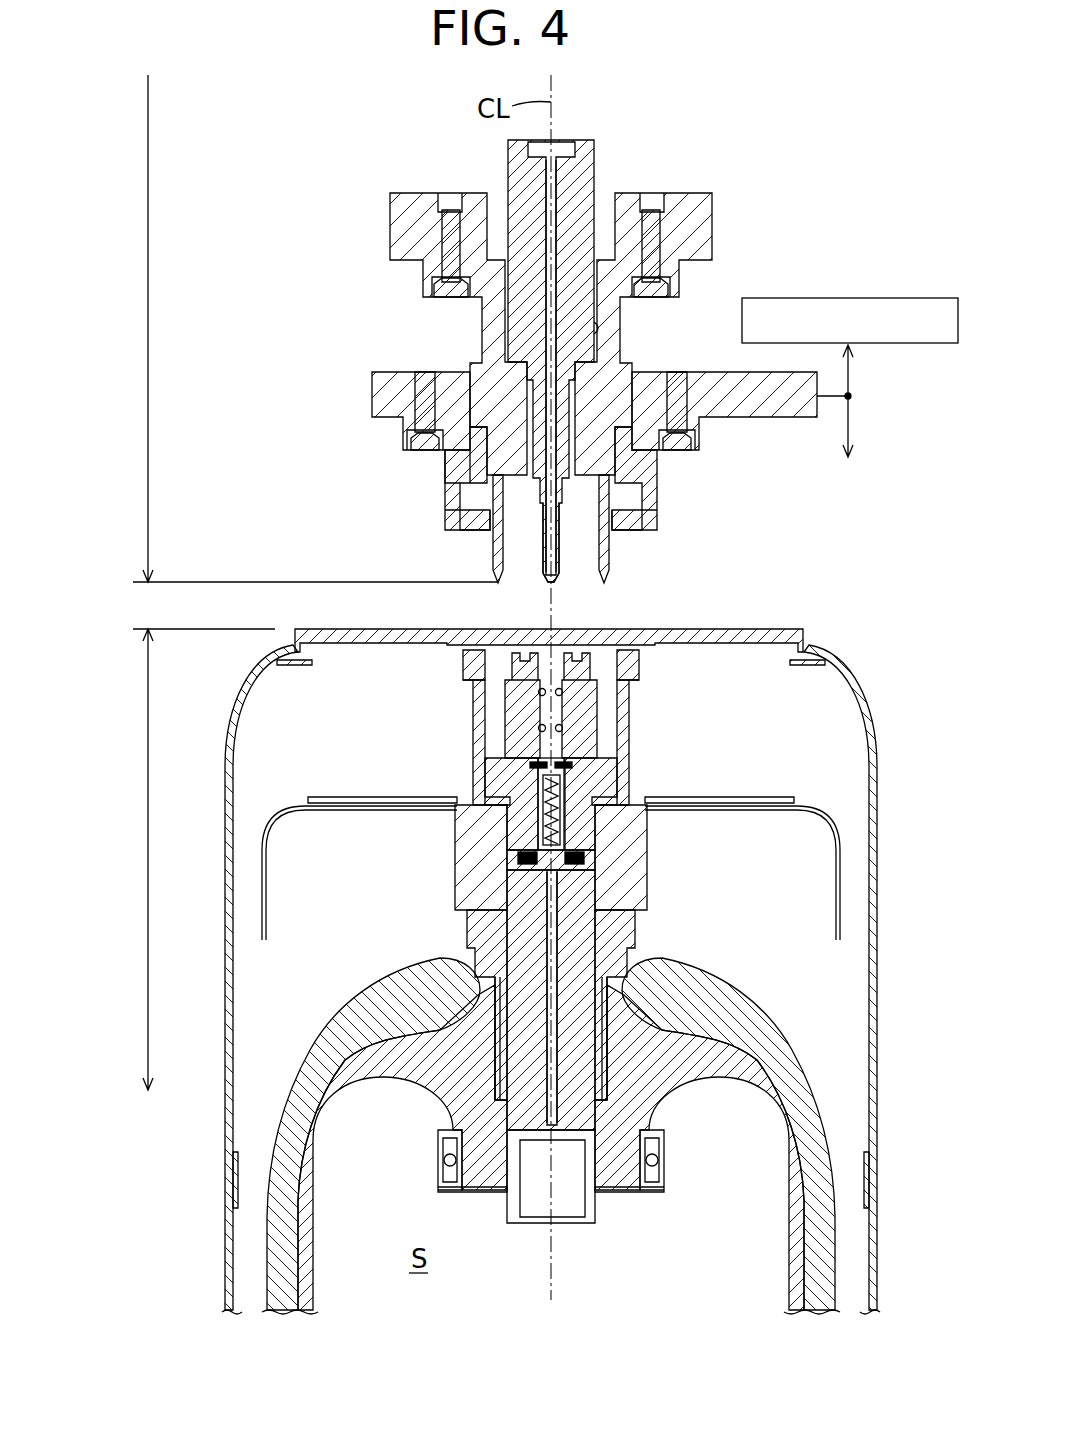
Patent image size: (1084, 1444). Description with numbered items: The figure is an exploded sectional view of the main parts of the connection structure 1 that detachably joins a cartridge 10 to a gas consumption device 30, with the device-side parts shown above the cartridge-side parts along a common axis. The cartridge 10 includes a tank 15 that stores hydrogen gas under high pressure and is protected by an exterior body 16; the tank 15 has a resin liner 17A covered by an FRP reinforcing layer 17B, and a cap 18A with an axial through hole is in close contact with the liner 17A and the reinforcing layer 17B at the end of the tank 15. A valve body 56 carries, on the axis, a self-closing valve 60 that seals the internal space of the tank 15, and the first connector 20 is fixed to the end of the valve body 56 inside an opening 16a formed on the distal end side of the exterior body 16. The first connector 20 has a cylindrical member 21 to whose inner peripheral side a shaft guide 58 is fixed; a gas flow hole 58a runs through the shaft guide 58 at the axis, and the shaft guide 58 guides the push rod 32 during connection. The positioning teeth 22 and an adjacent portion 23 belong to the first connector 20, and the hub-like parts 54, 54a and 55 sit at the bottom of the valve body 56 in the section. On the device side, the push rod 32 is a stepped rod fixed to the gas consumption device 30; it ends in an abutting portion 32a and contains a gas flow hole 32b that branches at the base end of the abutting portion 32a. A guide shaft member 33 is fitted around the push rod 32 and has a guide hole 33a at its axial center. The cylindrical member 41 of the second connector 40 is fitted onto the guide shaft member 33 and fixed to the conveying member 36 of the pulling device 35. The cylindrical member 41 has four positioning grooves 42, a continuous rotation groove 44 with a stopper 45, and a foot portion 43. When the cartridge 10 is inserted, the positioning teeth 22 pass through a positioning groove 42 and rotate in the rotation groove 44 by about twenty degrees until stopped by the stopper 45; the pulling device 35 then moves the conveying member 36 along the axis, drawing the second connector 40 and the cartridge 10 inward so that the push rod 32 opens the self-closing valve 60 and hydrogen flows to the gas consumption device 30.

The connection structure 1 is at (744, 561).
The cartridge 10 is at (148, 994).
The tank 15 is at (247, 1254).
The exterior body 16 is at (225, 1120).
The opening 16a is at (630, 628).
The liner 17A is at (805, 1290).
The reinforcing layer 17B is at (832, 1225).
The cap 18A is at (455, 1128).
The first connector 20 is at (664, 691).
The cylindrical member 21 is at (473, 708).
The positioning teeth 22 is at (463, 658).
The engaging portion 23 is at (465, 668).
The gas consumption device 30 is at (148, 236).
The push rod 32 is at (594, 150).
The abutting portion 32a is at (545, 584).
The gas flow hole 32b is at (548, 190).
The guide shaft member 33 is at (483, 313).
The guide hole 33a is at (600, 327).
The pulling device 35 is at (857, 293).
The conveying member 36 is at (372, 392).
The second connector 40 is at (727, 473).
The cylindrical member 41 is at (450, 485).
The positioning groove 42 is at (652, 512).
The guide foot 43 is at (455, 520).
The rotation groove 44 is at (458, 495).
The stopper 45 is at (652, 495).
The impeller 54 is at (585, 1070).
The shaft hole 54a is at (557, 930).
The nut 55 is at (597, 1197).
The valve body 56 is at (456, 878).
The shaft guide 58 is at (520, 735).
The gas flow hole 58a is at (560, 728).
The self-closing valve 60 is at (588, 829).